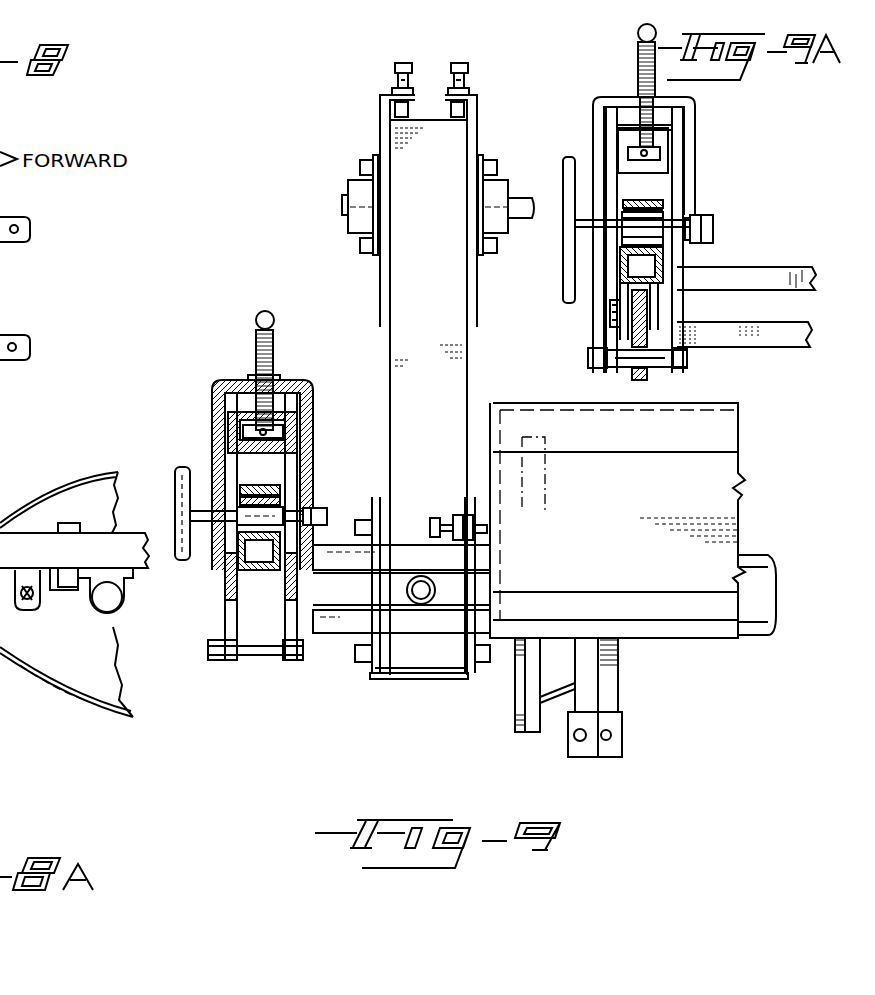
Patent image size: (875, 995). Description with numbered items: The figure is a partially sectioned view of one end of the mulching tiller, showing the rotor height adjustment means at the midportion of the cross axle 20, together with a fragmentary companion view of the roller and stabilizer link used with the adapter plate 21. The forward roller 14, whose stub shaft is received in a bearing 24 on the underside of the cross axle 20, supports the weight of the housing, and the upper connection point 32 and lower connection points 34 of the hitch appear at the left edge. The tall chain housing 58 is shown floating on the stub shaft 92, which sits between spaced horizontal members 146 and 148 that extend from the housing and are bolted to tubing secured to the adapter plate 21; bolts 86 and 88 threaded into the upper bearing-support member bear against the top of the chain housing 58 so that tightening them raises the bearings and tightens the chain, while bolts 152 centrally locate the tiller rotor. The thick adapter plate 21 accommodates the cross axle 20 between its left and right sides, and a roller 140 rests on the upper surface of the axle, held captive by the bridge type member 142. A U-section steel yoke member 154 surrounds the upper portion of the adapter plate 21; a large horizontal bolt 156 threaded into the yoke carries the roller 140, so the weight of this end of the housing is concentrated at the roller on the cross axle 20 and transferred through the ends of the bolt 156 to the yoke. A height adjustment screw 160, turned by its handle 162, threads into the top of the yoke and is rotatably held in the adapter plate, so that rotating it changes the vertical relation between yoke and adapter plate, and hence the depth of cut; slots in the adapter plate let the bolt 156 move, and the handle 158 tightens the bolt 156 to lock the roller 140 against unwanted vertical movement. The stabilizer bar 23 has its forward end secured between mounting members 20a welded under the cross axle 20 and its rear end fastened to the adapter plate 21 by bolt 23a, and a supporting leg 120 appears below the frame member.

In FIG. 9, the forward roller 14 is at (80, 707).
In FIG. 9A, the cross axle 20 is at (622, 270).
In FIG. 9, the mounting members 20a is at (40, 610).
In FIG. 9A, the mounting members 20a is at (655, 298).
In FIG. 9, the adapter plate 21 is at (293, 585).
In FIG. 9A, the adapter plate 21 is at (605, 325).
In FIG. 9A, the stabilizer bar 23 is at (645, 378).
In FIG. 9A, the bolt 23a is at (683, 362).
In FIG. 9, the bearing 24 is at (83, 604).
In FIG. 9, the upper connection point 32 is at (30, 226).
In FIG. 9, the lower connection points 34 is at (30, 346).
In FIG. 9, the chain housing 58 is at (450, 145).
In FIG. 9, the bolt 86 is at (405, 62).
In FIG. 9, the bolt 88 is at (458, 62).
In FIG. 9, the stub shaft 92 is at (410, 605).
In FIG. 9, the leg 120 is at (525, 732).
In FIG. 9, the roller 140 is at (287, 497).
In FIG. 9A, the roller 140 is at (665, 215).
In FIG. 9, the bridge type member 142 is at (258, 482).
In FIG. 9, the horizontal member 146 is at (392, 550).
In FIG. 9A, the horizontal member 146 is at (745, 272).
In FIG. 9, the horizontal member 148 is at (448, 622).
In FIG. 9A, the horizontal member 148 is at (740, 340).
In FIG. 9, the bolts 152 is at (433, 518).
In FIG. 9, the yoke member 154 is at (305, 395).
In FIG. 9, the bolt 156 is at (215, 540).
In FIG. 9, the handle 158 is at (175, 510).
In FIG. 9A, the handle 158 is at (570, 280).
In FIG. 9, the height adjustment screw 160 is at (256, 350).
In FIG. 9A, the height adjustment screw 160 is at (637, 70).
In FIG. 9, the handle 162 is at (274, 318).
In FIG. 9A, the handle 162 is at (637, 33).